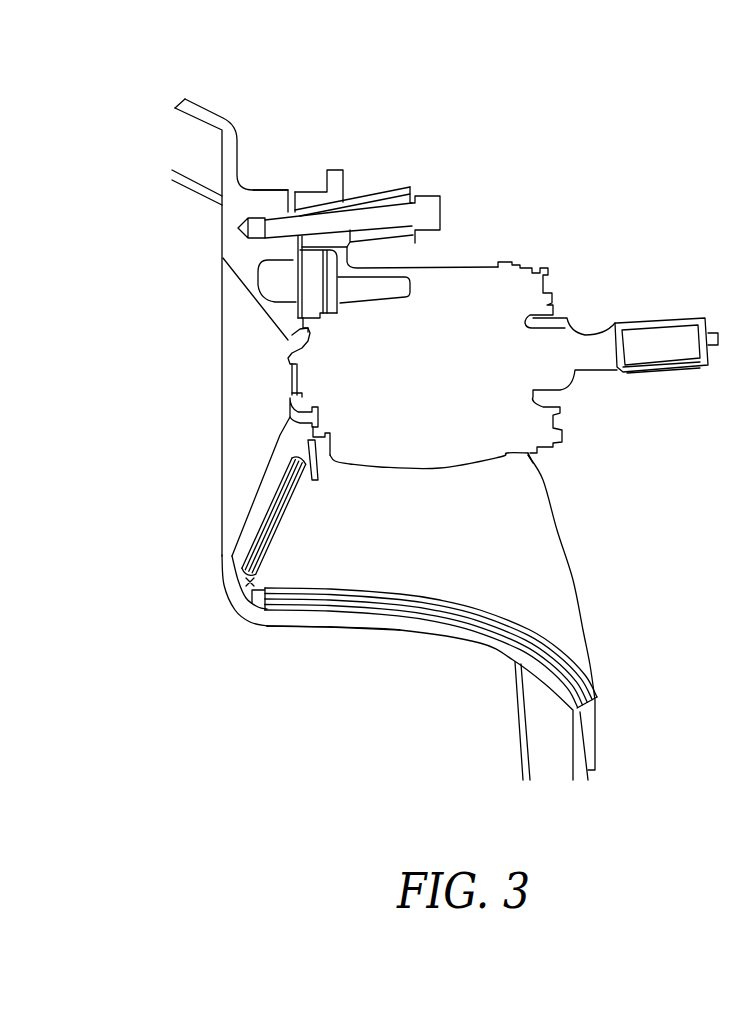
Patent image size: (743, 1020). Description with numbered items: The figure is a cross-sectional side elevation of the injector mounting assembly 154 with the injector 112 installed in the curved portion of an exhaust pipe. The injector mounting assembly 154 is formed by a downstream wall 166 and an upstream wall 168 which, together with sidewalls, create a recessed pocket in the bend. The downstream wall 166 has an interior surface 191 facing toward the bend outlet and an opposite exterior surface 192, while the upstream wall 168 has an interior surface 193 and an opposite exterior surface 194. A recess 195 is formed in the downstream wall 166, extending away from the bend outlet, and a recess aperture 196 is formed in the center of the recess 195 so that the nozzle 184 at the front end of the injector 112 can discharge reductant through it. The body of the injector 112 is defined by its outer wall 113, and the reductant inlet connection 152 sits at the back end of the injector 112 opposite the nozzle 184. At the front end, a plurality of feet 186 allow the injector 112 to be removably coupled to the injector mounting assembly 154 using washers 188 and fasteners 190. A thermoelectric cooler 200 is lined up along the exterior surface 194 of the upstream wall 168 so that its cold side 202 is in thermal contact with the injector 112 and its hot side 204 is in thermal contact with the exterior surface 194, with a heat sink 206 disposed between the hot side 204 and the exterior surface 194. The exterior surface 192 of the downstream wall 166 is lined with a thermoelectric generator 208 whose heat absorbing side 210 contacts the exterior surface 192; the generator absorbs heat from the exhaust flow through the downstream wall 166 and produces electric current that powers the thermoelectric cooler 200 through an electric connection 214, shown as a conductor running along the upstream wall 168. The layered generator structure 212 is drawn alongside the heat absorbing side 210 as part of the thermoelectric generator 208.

The injector 112 is at (510, 256).
The outer wall 113 is at (474, 266).
The reductant inlet connection 152 is at (658, 352).
The injector mounting assembly 154 is at (246, 634).
The downstream wall 166 is at (223, 223).
The upstream wall 168 is at (412, 623).
The nozzle 184 is at (298, 381).
The feet 186 is at (304, 193).
The washers 188 is at (373, 194).
The fasteners 190 is at (256, 196).
The interior surface 191 is at (228, 553).
The exterior surface 192 is at (284, 518).
The interior surface 193 is at (356, 631).
The exterior surface 194 is at (305, 584).
The recess 195 is at (214, 336).
The recess aperture 196 is at (289, 411).
The thermoelectric cooler 200 is at (690, 640).
The cold side 202 is at (568, 655).
The hot side 204 is at (588, 682).
The heat sink 206 is at (270, 525).
The thermoelectric generator 208 is at (143, 453).
The heat absorbing side 210 is at (287, 470).
The inner sheath 212 is at (287, 500).
The electric connection 214 is at (247, 603).